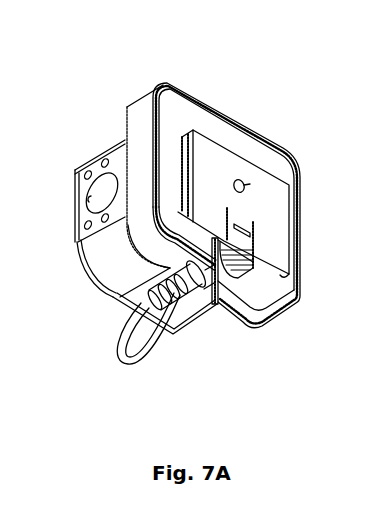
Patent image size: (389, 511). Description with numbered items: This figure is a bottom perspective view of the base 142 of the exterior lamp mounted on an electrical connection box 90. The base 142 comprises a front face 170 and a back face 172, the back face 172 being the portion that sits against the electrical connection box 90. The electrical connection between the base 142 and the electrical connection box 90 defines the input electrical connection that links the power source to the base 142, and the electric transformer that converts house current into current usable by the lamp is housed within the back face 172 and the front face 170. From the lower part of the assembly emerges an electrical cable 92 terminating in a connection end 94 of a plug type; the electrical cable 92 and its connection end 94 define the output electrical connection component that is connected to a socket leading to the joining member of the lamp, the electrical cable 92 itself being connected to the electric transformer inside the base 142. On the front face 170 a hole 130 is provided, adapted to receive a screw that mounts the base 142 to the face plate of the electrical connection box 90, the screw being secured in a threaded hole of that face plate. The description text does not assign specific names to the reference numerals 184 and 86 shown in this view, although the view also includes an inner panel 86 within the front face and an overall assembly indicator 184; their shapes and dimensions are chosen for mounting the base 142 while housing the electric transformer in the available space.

The device assembly 184 is at (133, 72).
The back face 172 is at (101, 116).
The base 142 is at (238, 118).
The front face 170 is at (261, 131).
The hole 130 is at (250, 184).
The front panel 86 is at (268, 210).
The electrical connection box 90 is at (107, 259).
The connection end 94 is at (140, 303).
The electrical cable 92 is at (147, 357).